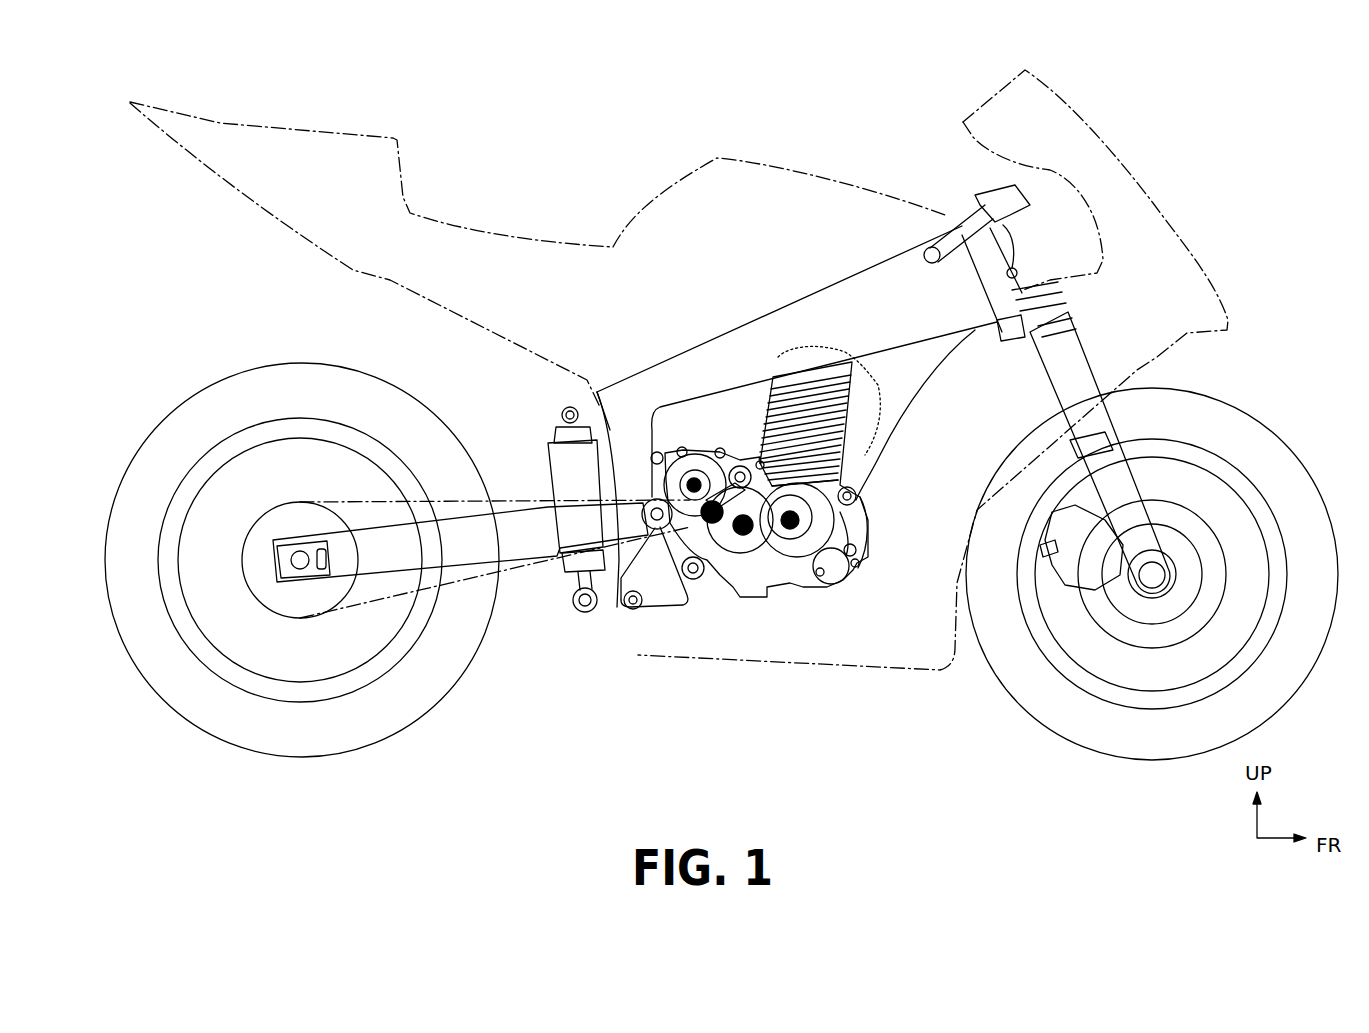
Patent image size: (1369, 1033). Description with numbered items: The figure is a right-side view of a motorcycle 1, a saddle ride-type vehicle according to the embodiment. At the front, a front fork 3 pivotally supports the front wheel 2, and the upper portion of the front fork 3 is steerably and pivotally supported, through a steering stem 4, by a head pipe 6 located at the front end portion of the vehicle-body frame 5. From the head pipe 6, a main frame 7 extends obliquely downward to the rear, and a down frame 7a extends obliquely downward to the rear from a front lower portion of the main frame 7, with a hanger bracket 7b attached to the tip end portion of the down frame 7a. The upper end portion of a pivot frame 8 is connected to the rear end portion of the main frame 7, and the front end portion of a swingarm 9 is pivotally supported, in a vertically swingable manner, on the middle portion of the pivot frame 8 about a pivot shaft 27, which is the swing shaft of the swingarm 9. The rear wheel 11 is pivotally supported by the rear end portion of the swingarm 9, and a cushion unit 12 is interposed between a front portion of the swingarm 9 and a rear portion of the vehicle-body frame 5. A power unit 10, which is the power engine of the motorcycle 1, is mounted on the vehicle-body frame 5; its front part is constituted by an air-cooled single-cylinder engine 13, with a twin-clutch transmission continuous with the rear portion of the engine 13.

The motorcycle 1 is at (862, 108).
The front wheel 2 is at (1152, 565).
The front fork 3 is at (1180, 462).
The steering stem 4 is at (1057, 313).
The vehicle-body frame 5 is at (823, 284).
The head pipe 6 is at (987, 272).
The main frame 7 is at (793, 468).
The down frame 7a is at (890, 420).
The hanger bracket 7b is at (865, 530).
The pivot frame 8 is at (663, 598).
The swingarm 9 is at (457, 556).
The power unit 10 is at (852, 572).
The rear wheel 11 is at (215, 400).
The cushion unit 12 is at (567, 477).
The engine 13 is at (802, 504).
The pivot shaft 27 is at (657, 522).